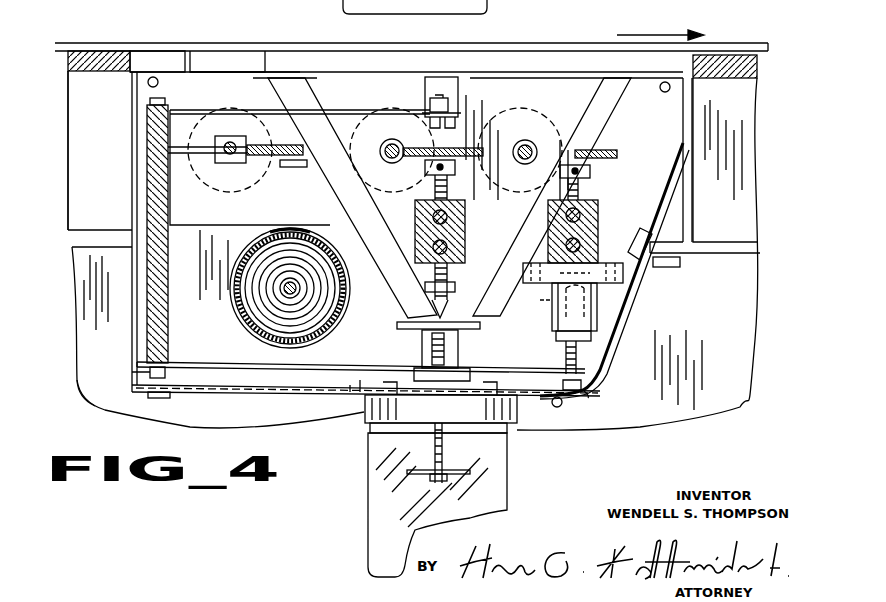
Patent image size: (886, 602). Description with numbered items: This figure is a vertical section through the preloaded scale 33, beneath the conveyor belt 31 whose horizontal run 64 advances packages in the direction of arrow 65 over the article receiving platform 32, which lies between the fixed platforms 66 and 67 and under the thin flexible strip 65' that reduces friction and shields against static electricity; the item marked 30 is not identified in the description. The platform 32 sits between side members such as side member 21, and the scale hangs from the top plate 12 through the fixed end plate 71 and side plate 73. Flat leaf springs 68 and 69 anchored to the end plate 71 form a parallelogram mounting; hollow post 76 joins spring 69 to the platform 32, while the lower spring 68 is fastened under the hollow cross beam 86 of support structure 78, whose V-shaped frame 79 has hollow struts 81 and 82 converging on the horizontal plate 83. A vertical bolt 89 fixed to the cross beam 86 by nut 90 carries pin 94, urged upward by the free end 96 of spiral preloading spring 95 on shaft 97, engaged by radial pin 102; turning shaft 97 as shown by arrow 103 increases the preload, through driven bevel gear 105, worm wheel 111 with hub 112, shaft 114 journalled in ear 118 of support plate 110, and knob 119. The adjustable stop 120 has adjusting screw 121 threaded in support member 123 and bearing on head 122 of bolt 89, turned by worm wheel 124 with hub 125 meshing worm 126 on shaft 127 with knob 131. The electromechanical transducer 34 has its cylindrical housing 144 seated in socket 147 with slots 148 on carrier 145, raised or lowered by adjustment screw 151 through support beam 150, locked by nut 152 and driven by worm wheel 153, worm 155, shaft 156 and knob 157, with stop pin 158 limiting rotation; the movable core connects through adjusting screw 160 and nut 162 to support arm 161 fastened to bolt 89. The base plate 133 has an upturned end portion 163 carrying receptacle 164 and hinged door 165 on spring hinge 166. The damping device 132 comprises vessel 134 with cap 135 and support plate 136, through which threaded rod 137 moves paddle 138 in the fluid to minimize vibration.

The support plate 30 is at (158, 40).
The thin flexible stationary strip 65' is at (171, 36).
The horizontal article receiving platform 32 is at (224, 58).
The horizontal run 64 is at (303, 43).
The fixed horizontal platform 66 is at (80, 58).
The fixed horizontal platform 67 is at (735, 68).
The side member 21 is at (80, 122).
The top plate 12 is at (85, 290).
The preloaded scale 33 is at (122, 356).
The arrow 65 is at (675, 26).
The conveyor belt 31 is at (505, 43).
The hollow post 76 is at (430, 78).
The knob 119 is at (238, 108).
The flat leaf spring 69 is at (170, 108).
The support plate 110 is at (175, 172).
The ear 118 is at (215, 152).
The worm wheel 111 is at (265, 148).
The horizontal shaft 114 is at (228, 158).
The hub 112 is at (290, 170).
The fixed support end plate 71 is at (150, 215).
The hollow strut 82 is at (370, 205).
The support structure 78 is at (608, 115).
The hollow strut 81 is at (512, 214).
The worm wheel 124 is at (455, 148).
The worm 126 is at (402, 146).
The horizontal shaft 127 is at (383, 143).
The knob 131 is at (392, 110).
The hub 125 is at (425, 167).
The adjustable stop 120 is at (418, 193).
The support member 123 is at (418, 214).
The vertical adjusting screw 121 is at (447, 200).
The pin 94 is at (440, 285).
The nut 90 is at (441, 316).
The head 122 is at (402, 316).
The laterally extending free end 96 is at (398, 325).
The hollow cross beam 86 is at (420, 345).
The vertically disposed bolt 89 is at (432, 357).
The horizontal plate 83 is at (465, 345).
The worm 155 is at (521, 147).
The shaft 156 is at (529, 158).
The knob 157 is at (530, 118).
The worm wheel 153 is at (605, 151).
The adjustment screw 151 is at (582, 188).
The support beam 150 is at (600, 216).
The V-shaped frame 79 is at (513, 268).
The carrier 145 is at (625, 275).
The nut 152 is at (640, 282).
The longitudinal slot 148 is at (598, 322).
The socket 147 is at (552, 326).
The electromechanical transducer 34 is at (606, 302).
The cylindrical housing 144 is at (556, 337).
The rigid support arm 161 is at (598, 382).
The adjusting screw 160 is at (606, 349).
The nut 162 is at (600, 373).
The stop pin 158 is at (634, 258).
The upwardly directed end portion 163 is at (663, 205).
The receptacle 164 is at (660, 233).
The horizontal shaft 97 is at (282, 282).
The radially projecting pin 102 is at (274, 234).
The spiral preloading spring 95 is at (240, 318).
The driven gear 105 is at (305, 336).
The flat leaf spring 68 is at (190, 362).
The arrow 103 is at (262, 368).
The side plate 73 is at (258, 393).
The base plate 133 is at (330, 393).
The hinged door 165 is at (592, 393).
The spring hinge 166 is at (558, 406).
The cap 135 is at (415, 418).
The support plate 136 is at (360, 418).
The vessel 134 is at (372, 540).
The damping device 132 is at (514, 462).
The threaded rod 137 is at (435, 456).
The paddle 138 is at (432, 476).